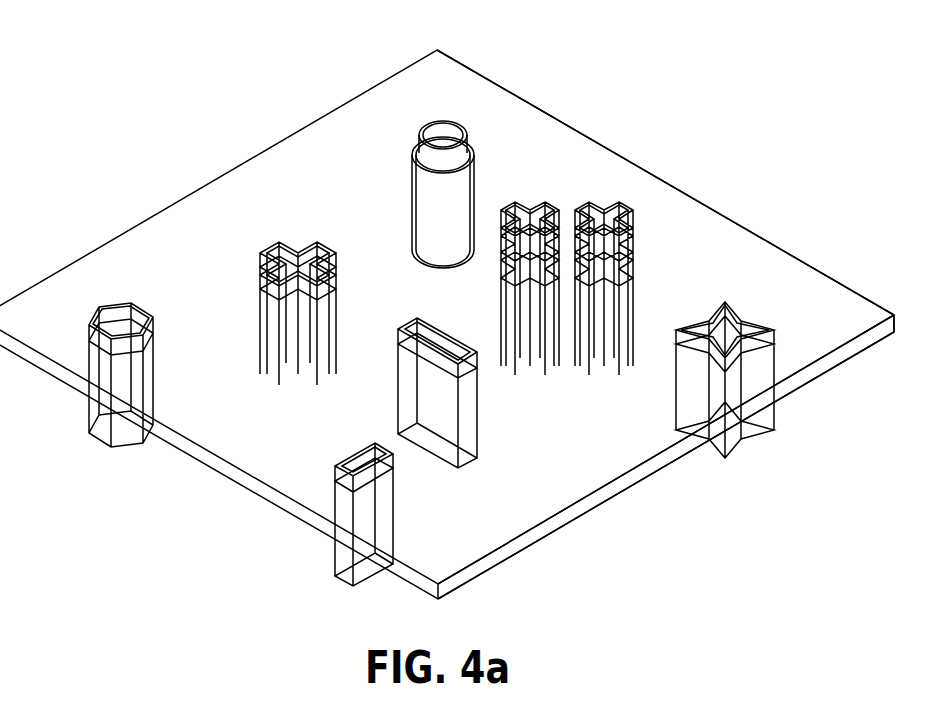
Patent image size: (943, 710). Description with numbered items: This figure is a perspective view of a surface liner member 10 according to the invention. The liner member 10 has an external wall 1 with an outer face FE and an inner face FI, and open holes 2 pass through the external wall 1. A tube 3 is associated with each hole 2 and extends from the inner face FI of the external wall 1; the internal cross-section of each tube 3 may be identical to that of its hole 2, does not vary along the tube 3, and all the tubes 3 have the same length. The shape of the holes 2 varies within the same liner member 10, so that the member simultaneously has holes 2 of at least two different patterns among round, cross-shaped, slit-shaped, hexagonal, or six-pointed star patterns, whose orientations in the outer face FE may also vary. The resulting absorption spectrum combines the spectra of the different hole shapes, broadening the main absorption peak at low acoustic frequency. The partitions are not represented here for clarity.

The surface liner member 10 is at (713, 112).
The external wall 1 is at (848, 355).
The open holes 2 is at (115, 318).
The tube 3 is at (80, 378).
The outer face FE is at (820, 314).
The inner face FI is at (820, 388).